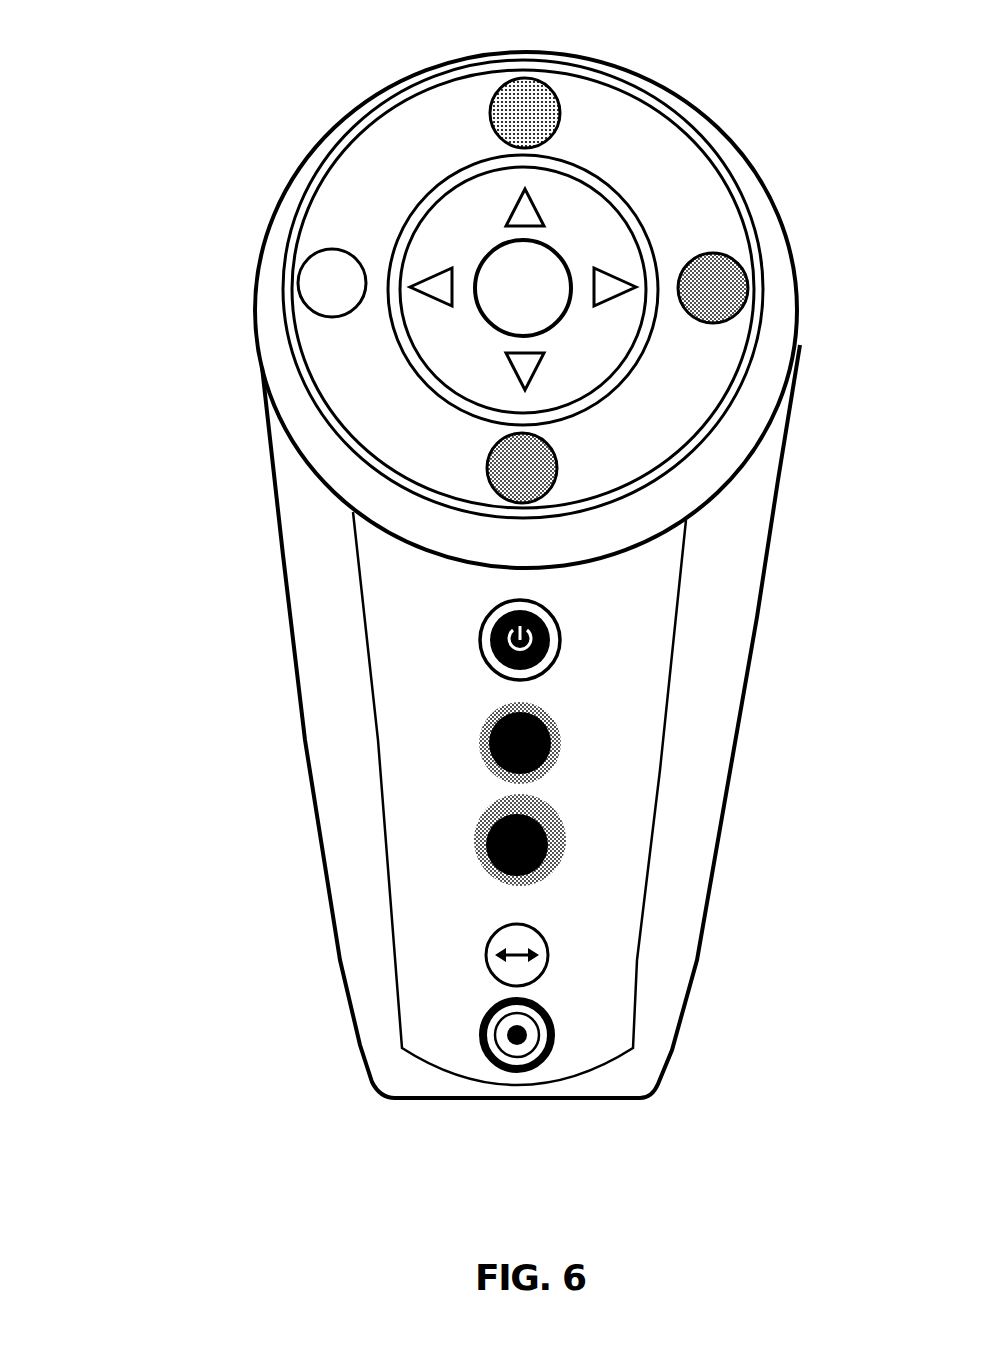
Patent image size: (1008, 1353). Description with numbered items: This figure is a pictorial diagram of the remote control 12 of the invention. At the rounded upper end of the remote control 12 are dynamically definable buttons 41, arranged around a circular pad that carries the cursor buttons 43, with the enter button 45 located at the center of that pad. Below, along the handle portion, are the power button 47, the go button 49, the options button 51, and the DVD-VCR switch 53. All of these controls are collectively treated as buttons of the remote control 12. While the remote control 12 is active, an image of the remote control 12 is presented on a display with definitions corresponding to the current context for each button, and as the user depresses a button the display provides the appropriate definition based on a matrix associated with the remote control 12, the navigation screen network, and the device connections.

The remote control 12 is at (176, 60).
The dynamically definable buttons 41 is at (713, 253).
The cursor buttons 43 is at (540, 372).
The enter button 45 is at (530, 272).
The power button 47 is at (558, 625).
The go button 49 is at (558, 742).
The options button 51 is at (547, 840).
The DVD-VCR switch 53 is at (612, 960).